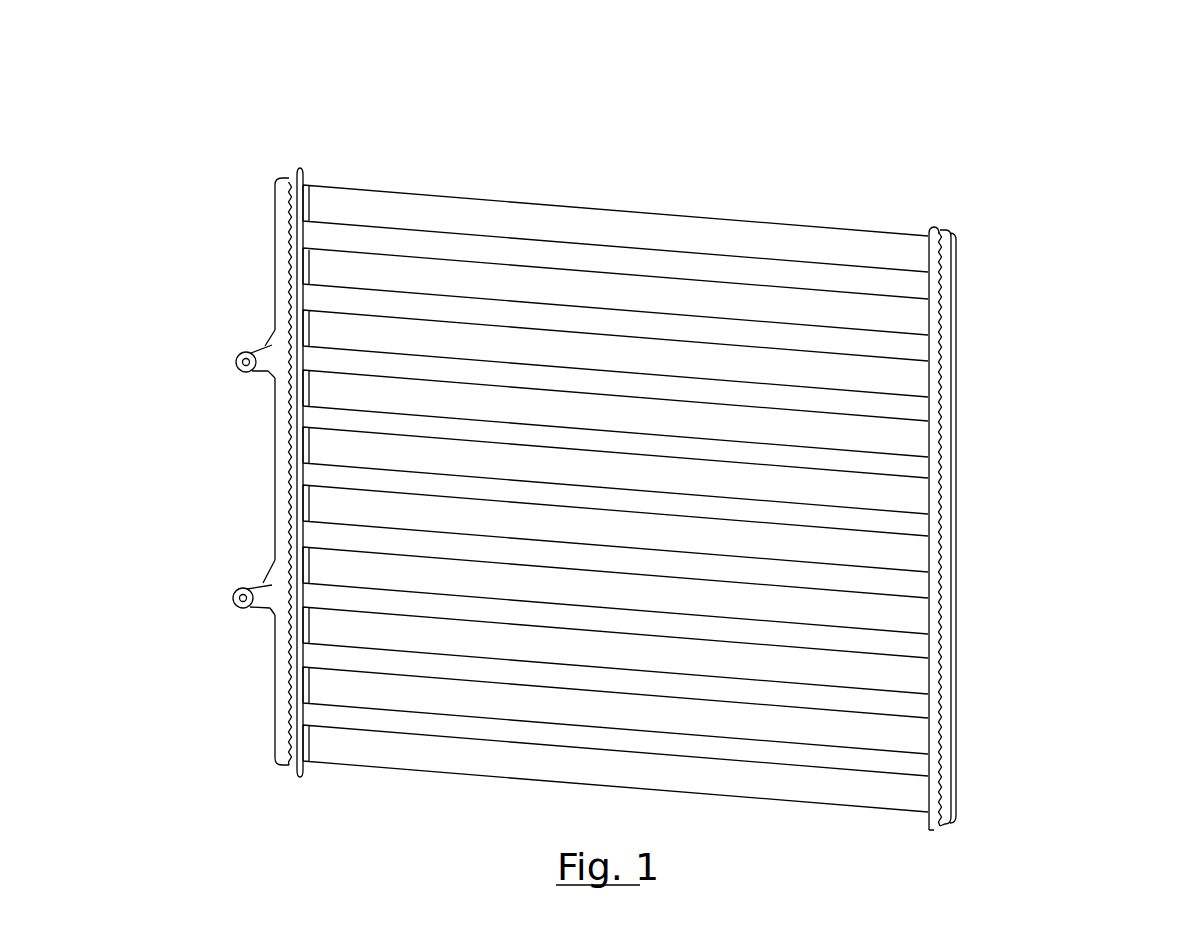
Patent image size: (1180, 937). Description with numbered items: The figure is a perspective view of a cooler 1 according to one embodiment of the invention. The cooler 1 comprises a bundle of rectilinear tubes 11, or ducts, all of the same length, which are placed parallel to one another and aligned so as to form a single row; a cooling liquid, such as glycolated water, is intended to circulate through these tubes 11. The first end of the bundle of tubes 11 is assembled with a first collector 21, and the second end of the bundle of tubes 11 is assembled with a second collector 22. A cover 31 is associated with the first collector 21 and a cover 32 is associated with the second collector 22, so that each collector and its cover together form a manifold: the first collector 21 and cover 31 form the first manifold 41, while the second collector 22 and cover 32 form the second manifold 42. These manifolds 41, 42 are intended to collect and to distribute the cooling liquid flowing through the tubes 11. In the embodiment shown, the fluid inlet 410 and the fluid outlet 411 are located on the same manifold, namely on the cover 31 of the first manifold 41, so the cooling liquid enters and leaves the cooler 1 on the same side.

The cooler 1 is at (180, 209).
The tubes 11 is at (646, 297).
The first collector 21 is at (299, 176).
The second collector 22 is at (932, 226).
The cover 31 is at (281, 177).
The cover 32 is at (958, 239).
The first manifold 41 is at (257, 525).
The second manifold 42 is at (970, 539).
The fluid inlet 410 is at (240, 356).
The fluid outlet 411 is at (240, 601).